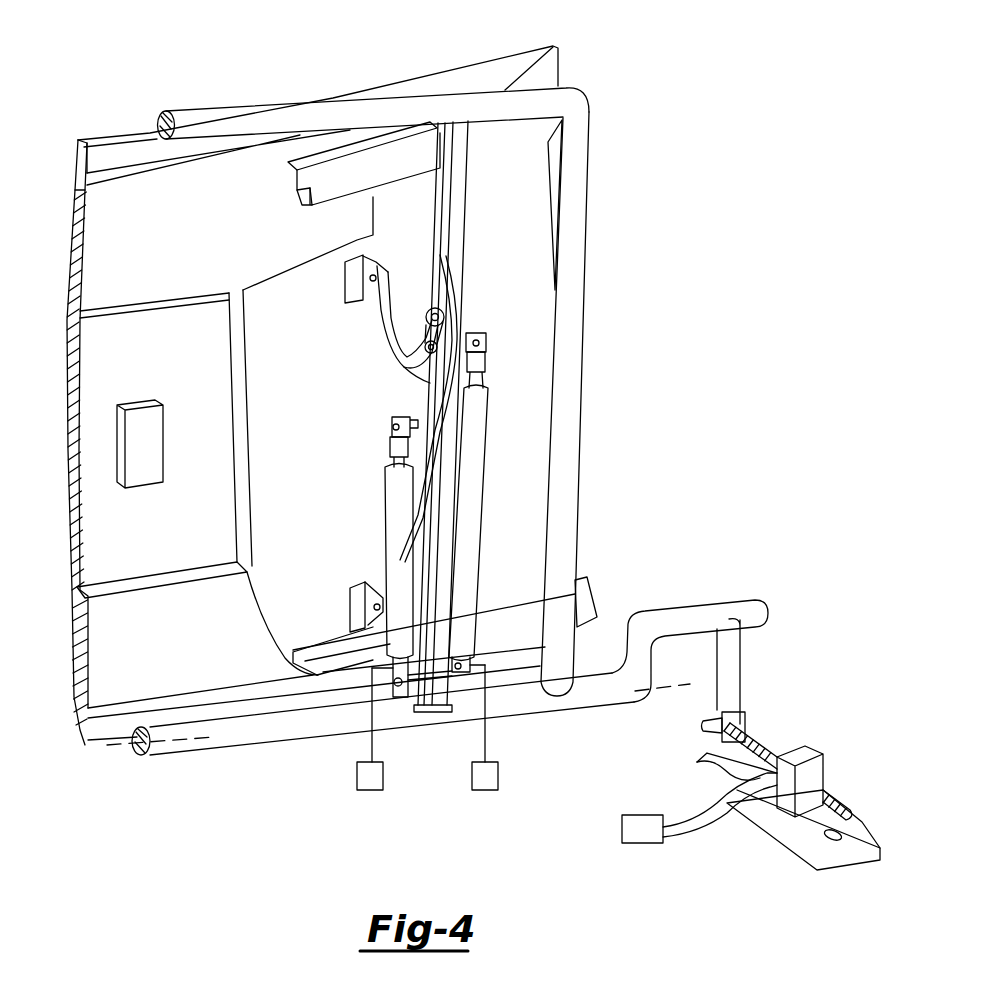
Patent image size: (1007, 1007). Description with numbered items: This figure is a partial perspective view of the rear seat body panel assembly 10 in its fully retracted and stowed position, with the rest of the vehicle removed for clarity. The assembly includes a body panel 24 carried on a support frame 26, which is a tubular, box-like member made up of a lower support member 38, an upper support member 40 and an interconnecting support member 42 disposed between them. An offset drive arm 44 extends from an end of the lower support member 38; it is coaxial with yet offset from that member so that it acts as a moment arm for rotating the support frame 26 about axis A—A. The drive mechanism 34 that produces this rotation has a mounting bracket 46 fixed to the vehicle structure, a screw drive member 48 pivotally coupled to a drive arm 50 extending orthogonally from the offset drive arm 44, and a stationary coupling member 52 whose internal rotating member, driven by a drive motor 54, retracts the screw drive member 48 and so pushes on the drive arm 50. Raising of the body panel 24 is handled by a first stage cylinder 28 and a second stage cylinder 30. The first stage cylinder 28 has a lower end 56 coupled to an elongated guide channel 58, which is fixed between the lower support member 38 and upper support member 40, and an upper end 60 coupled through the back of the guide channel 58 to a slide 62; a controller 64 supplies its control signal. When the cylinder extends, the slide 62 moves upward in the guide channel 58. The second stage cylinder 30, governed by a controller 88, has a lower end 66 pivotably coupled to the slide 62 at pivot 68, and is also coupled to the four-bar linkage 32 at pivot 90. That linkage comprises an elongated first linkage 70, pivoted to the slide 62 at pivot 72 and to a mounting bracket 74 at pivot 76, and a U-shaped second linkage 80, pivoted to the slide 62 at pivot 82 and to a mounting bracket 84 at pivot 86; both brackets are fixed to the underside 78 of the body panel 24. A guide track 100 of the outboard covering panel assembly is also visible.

The rear seat body panel assembly 10 is at (656, 90).
The body panel 24 is at (112, 140).
The support frame 26 is at (585, 280).
The first stage cylinder 28 is at (482, 453).
The second stage cylinder 30 is at (388, 497).
The four-bar linkage 32 is at (350, 362).
The drive mechanism 34 is at (799, 699).
The lower support member 38 is at (250, 735).
The upper support member 40 is at (228, 110).
The interconnecting support member 42 is at (578, 367).
The offset drive arm 44 is at (680, 617).
The mounting bracket 46 is at (767, 817).
The screw drive member 48 is at (727, 737).
The drive arm 50 is at (742, 668).
The stationary coupling member 52 is at (807, 747).
The drive motor 54 is at (652, 843).
The lower end 56 is at (477, 647).
The guide channel 58 is at (473, 175).
The upper end 60 is at (477, 342).
The slide 62 is at (440, 255).
The controller 64 is at (490, 790).
The lower end 66 is at (393, 648).
The pivot 68 is at (400, 686).
The first linkage 70 is at (417, 407).
The pivot 72 is at (438, 347).
The mounting bracket 74 is at (348, 593).
The pivot 76 is at (361, 583).
The underside 78 is at (266, 452).
The second linkage 80 is at (375, 338).
The pivot 82 is at (428, 318).
The mounting bracket 84 is at (347, 297).
The pivot 86 is at (370, 278).
The controller 88 is at (365, 790).
The pivot 90 is at (390, 423).
The guide track 100 is at (343, 207).